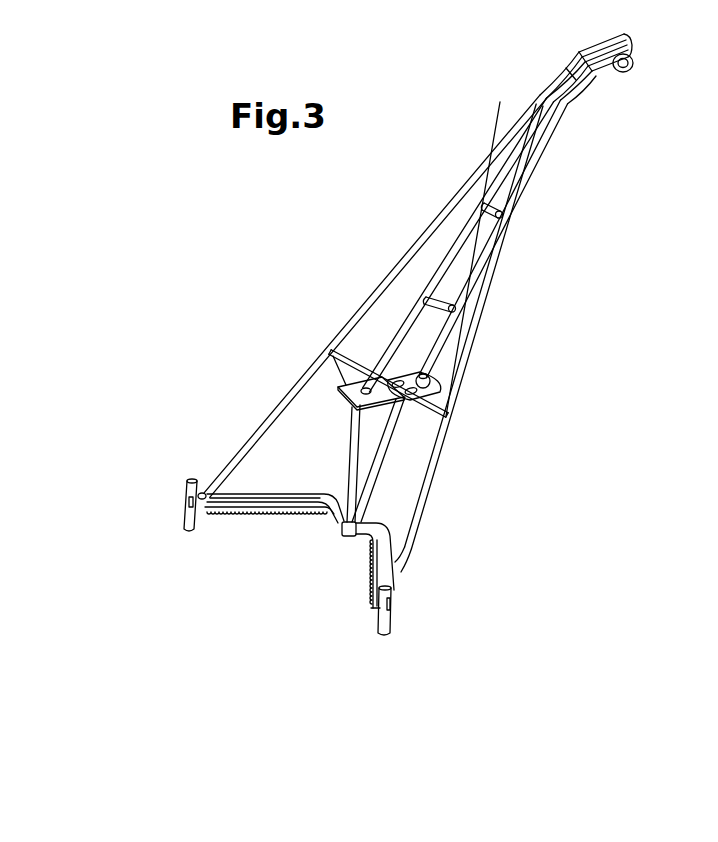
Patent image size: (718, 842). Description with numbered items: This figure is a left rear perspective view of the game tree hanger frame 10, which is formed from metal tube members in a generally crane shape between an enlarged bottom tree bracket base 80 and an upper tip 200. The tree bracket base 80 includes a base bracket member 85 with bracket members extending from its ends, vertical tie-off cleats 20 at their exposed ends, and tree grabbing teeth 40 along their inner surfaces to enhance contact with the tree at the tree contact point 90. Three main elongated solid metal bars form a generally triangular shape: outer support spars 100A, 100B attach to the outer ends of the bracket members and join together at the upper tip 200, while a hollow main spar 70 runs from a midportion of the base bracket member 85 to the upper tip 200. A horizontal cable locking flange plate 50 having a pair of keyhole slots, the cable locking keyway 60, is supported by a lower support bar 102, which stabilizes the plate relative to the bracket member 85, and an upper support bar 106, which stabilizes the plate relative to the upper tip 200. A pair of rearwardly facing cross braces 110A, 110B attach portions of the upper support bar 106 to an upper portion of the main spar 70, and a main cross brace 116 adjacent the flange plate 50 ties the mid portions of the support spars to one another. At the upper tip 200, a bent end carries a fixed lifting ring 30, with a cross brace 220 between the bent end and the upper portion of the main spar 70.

The tree hanger frame 10 is at (232, 200).
The upper tip 200 is at (556, 28).
The cross brace 220 is at (580, 84).
The lifting ring 30 is at (630, 72).
The support spar 100A is at (228, 467).
The support spar 100B is at (507, 248).
The upper support bar for flange plate 106 is at (455, 249).
The main spar 70 is at (515, 200).
The rearwardly facing cross brace 110A is at (436, 300).
The rearwardly facing cross brace 110B is at (490, 203).
The cable locking flange plate 50 is at (332, 351).
The main cross brace for support spars 116 is at (446, 417).
The tree contact point 90 is at (345, 393).
The cable locking keyway 60 is at (433, 397).
The lower support bar for flange plate 102 is at (350, 455).
The base front member bracket member 85 is at (365, 537).
The tree bracket base 80 is at (412, 551).
The tree grabbing teeth 40 is at (250, 517).
The tie-off cleat 20 is at (189, 490).